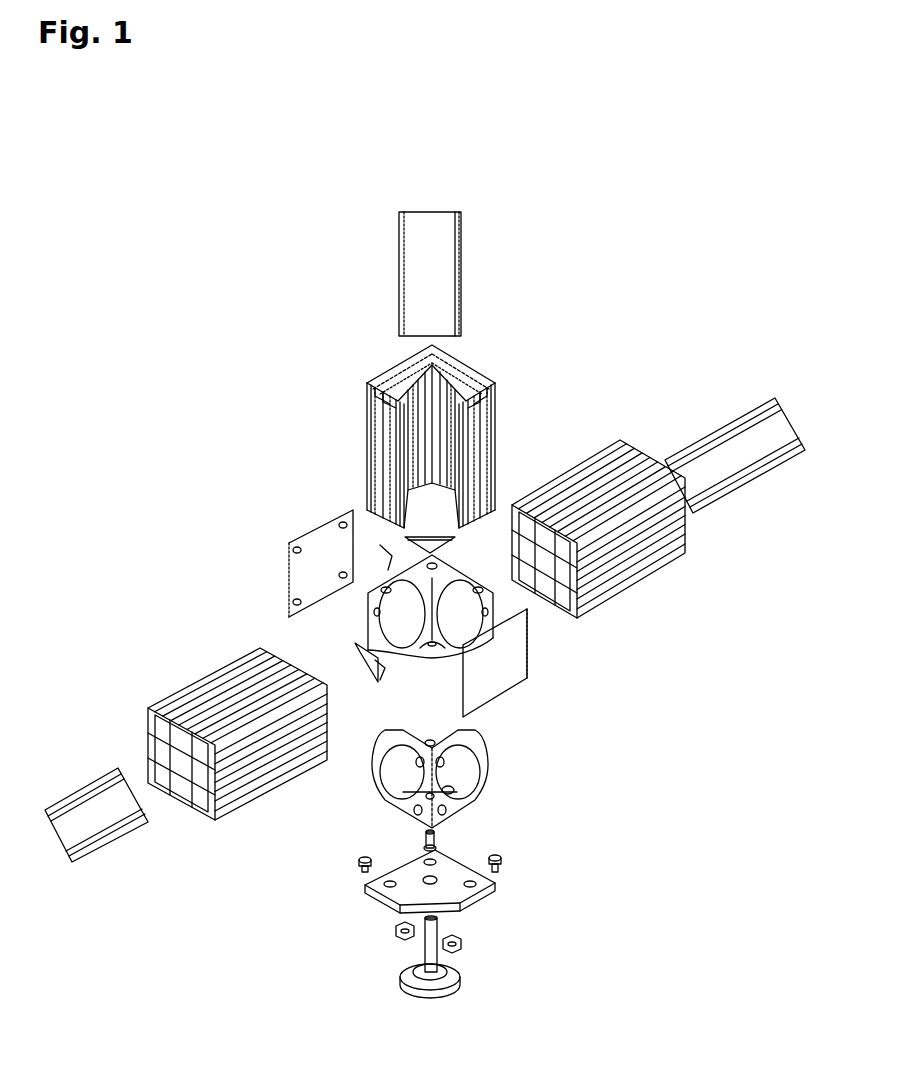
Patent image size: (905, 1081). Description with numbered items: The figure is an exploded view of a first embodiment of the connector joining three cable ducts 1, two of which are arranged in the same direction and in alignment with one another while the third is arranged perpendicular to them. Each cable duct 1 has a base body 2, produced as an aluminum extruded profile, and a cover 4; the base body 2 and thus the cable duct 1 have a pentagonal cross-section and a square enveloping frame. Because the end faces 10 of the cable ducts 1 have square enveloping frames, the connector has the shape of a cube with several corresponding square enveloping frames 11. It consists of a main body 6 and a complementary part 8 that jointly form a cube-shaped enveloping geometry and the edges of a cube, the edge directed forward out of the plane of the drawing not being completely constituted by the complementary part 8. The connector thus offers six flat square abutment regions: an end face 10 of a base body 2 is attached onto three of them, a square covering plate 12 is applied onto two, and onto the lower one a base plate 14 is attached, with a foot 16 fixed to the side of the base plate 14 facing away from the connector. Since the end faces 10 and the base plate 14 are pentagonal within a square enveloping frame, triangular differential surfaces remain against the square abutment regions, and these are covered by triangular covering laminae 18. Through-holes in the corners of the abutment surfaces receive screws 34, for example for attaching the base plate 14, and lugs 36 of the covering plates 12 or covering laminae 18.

The cable duct 1 is at (360, 346).
The base body 2 is at (385, 437).
The cover 4 is at (450, 242).
The main body 6 is at (362, 608).
The complementary part 8 is at (375, 795).
The end face 10 is at (480, 532).
The square enveloping frame 11 is at (388, 572).
The covering plate 12 is at (322, 540).
The base plate 14 is at (465, 893).
The foot 16 is at (445, 975).
The covering lamina 18 is at (385, 545).
The screw 34 is at (505, 864).
The lug 36 is at (290, 562).